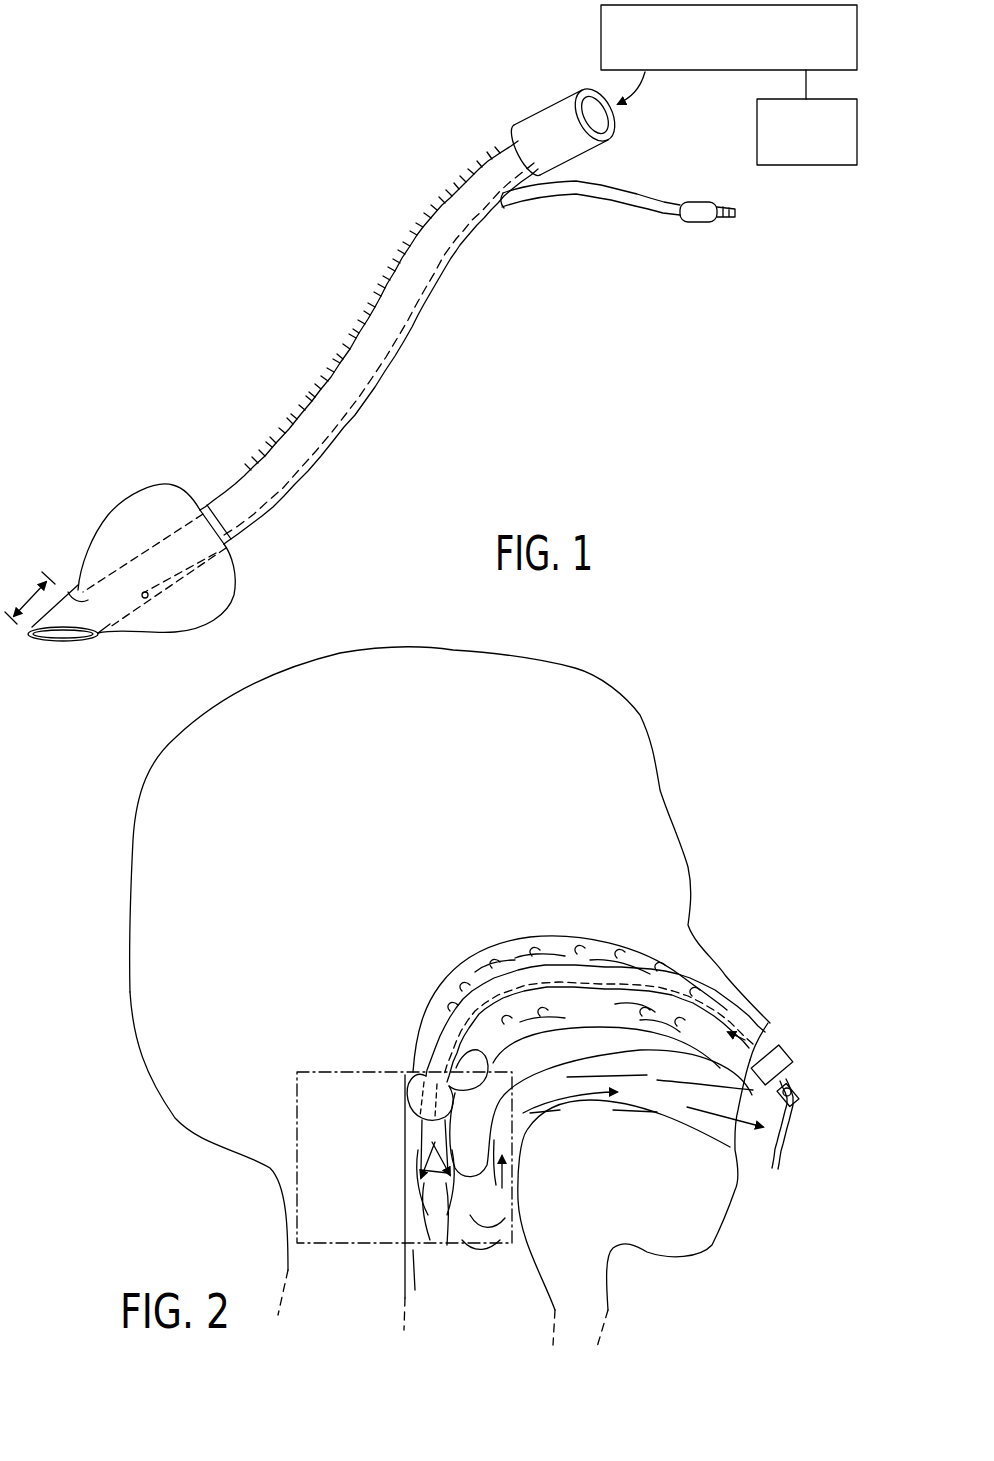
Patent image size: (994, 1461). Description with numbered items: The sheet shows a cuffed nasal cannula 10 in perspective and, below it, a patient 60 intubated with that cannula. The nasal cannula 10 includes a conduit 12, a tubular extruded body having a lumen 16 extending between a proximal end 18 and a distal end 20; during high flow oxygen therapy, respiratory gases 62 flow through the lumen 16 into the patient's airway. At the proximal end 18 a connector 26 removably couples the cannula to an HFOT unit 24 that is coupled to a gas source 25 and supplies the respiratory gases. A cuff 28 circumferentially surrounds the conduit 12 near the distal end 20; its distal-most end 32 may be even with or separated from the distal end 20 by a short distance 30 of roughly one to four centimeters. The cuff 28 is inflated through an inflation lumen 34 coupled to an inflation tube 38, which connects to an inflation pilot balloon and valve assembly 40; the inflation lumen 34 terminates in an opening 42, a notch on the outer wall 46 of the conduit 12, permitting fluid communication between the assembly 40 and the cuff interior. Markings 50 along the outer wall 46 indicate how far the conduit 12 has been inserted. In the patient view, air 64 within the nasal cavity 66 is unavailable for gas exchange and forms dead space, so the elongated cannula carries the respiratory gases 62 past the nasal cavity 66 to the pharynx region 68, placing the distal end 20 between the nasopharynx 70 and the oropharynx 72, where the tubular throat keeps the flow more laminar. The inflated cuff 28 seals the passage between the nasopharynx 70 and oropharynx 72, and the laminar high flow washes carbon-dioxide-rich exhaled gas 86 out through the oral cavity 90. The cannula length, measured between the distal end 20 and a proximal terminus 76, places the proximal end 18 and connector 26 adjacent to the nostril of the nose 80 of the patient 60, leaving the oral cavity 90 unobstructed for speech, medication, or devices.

In FIG. 1, the nasal cannula 10 is at (232, 226).
In FIG. 1, the conduit 12 is at (407, 243).
In FIG. 2, the conduit 12 is at (706, 1005).
In FIG. 1, the lumen 16 is at (46, 642).
In FIG. 2, the lumen 16 is at (444, 1238).
In FIG. 1, the proximal end 18 is at (522, 121).
In FIG. 2, the proximal end 18 is at (790, 1035).
In FIG. 1, the distal end 20 is at (72, 643).
In FIG. 2, the distal end 20 is at (428, 1205).
In FIG. 1, the HFOT unit 24 is at (735, 71).
In FIG. 1, the gas source 25 is at (785, 166).
In FIG. 1, the connector 26 is at (626, 148).
In FIG. 2, the connector 26 is at (795, 1048).
In FIG. 1, the cuff 28 is at (238, 578).
In FIG. 2, the cuff 28 is at (486, 1062).
In FIG. 1, the distance 30 is at (33, 600).
In FIG. 1, the distal-most end 32 is at (75, 596).
In FIG. 1, the inflation lumen 34 is at (388, 357).
In FIG. 2, the inflation lumen 34 is at (632, 1033).
In FIG. 1, the inflation tube 38 is at (578, 196).
In FIG. 2, the inflation tube 38 is at (778, 1100).
In FIG. 1, the inflation pilot balloon and valve assembly 40 is at (690, 202).
In FIG. 2, the inflation pilot balloon and valve assembly 40 is at (800, 1098).
In FIG. 1, the opening 42 is at (508, 205).
In FIG. 2, the opening 42 is at (406, 1107).
In FIG. 1, the outer wall 46 is at (262, 520).
In FIG. 1, the markings 50 is at (294, 424).
In FIG. 2, the patient 60 is at (750, 870).
In FIG. 2, the respiratory gases 62 is at (412, 1156).
In FIG. 2, the air 64 is at (668, 1012).
In FIG. 2, the nasal cavity 66 is at (572, 1029).
In FIG. 2, the pharynx region 68 is at (298, 1158).
In FIG. 2, the nasopharynx 70 is at (410, 1082).
In FIG. 2, the oropharynx 72 is at (404, 1166).
In FIG. 2, the proximal terminus 76 is at (797, 1070).
In FIG. 2, the nose 80 is at (787, 1030).
In FIG. 2, the exhaled gas 86 is at (563, 1097).
In FIG. 2, the oral cavity 90 is at (738, 1140).